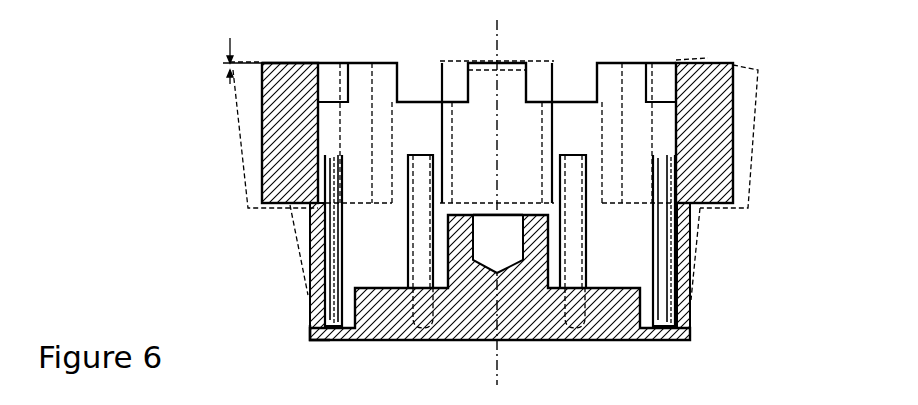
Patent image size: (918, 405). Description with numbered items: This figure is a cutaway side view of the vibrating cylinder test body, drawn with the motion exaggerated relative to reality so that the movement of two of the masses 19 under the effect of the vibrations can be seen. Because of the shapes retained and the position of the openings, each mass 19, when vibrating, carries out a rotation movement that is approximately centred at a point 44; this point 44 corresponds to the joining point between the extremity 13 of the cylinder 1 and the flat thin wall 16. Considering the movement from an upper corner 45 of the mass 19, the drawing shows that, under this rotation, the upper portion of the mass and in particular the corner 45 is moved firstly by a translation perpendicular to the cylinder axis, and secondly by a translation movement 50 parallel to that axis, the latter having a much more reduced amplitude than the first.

The cylinder 1 is at (693, 246).
The extremity of the cylinder 13 is at (308, 300).
The flat thin wall 16 is at (333, 330).
The mass 19 is at (262, 122).
The point 44 is at (310, 340).
The upper corner of the mass 45 is at (270, 61).
The translation movement parallel to the axis 50 is at (230, 70).